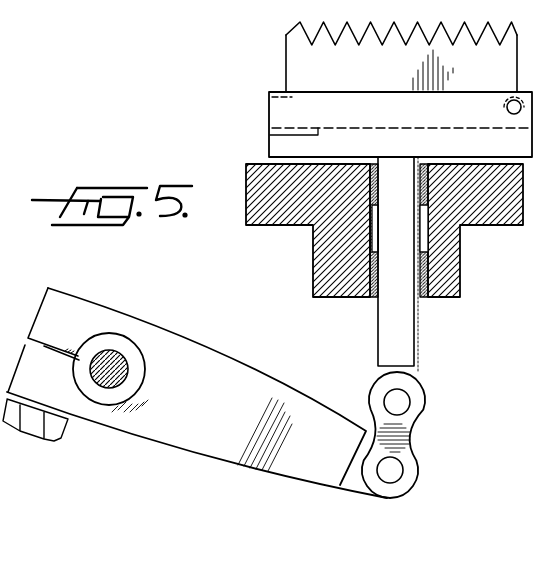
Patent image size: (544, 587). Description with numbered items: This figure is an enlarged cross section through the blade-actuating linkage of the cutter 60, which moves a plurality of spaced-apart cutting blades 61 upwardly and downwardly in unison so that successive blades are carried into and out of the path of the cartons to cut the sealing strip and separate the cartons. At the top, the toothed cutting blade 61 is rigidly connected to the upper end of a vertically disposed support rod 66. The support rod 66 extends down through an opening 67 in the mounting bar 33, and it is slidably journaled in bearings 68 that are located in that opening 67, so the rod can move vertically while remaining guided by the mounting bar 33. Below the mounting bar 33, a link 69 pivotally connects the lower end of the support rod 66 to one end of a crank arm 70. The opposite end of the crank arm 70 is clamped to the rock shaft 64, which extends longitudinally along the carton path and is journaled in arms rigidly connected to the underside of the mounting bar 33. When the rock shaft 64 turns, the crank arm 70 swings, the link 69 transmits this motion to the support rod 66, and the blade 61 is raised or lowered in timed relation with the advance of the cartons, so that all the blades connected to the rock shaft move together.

The mounting bar 33 is at (316, 257).
The cutter 60 is at (233, 150).
The cutting blades 61 is at (291, 66).
The rock shaft 64 is at (118, 352).
The support rod 66 is at (381, 328).
The opening 67 is at (422, 228).
The bearings 68 is at (382, 143).
The link 69 is at (411, 418).
The crank arm 70 is at (233, 426).